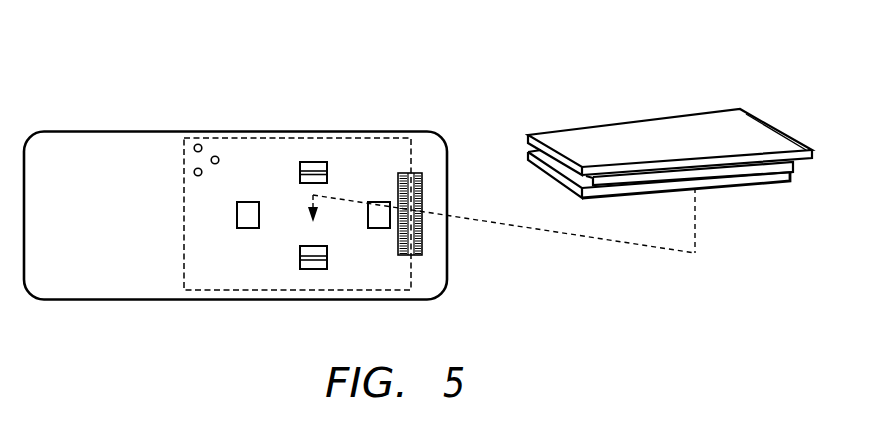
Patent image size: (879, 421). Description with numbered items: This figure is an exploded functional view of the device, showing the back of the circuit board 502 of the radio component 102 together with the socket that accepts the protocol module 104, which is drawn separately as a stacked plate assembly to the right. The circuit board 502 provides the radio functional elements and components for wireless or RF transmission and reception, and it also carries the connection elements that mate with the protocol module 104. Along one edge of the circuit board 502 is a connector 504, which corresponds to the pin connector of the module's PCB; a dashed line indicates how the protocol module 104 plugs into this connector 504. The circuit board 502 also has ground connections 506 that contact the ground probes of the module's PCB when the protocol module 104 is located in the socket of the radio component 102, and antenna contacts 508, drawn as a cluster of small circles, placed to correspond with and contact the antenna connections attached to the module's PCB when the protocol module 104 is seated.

The radio component 102 is at (84, 95).
The protocol module 104 is at (584, 105).
The circuit board 502 is at (148, 302).
The connector 504 is at (422, 228).
The ground connections 506 is at (317, 161).
The antenna contacts 508 is at (200, 143).